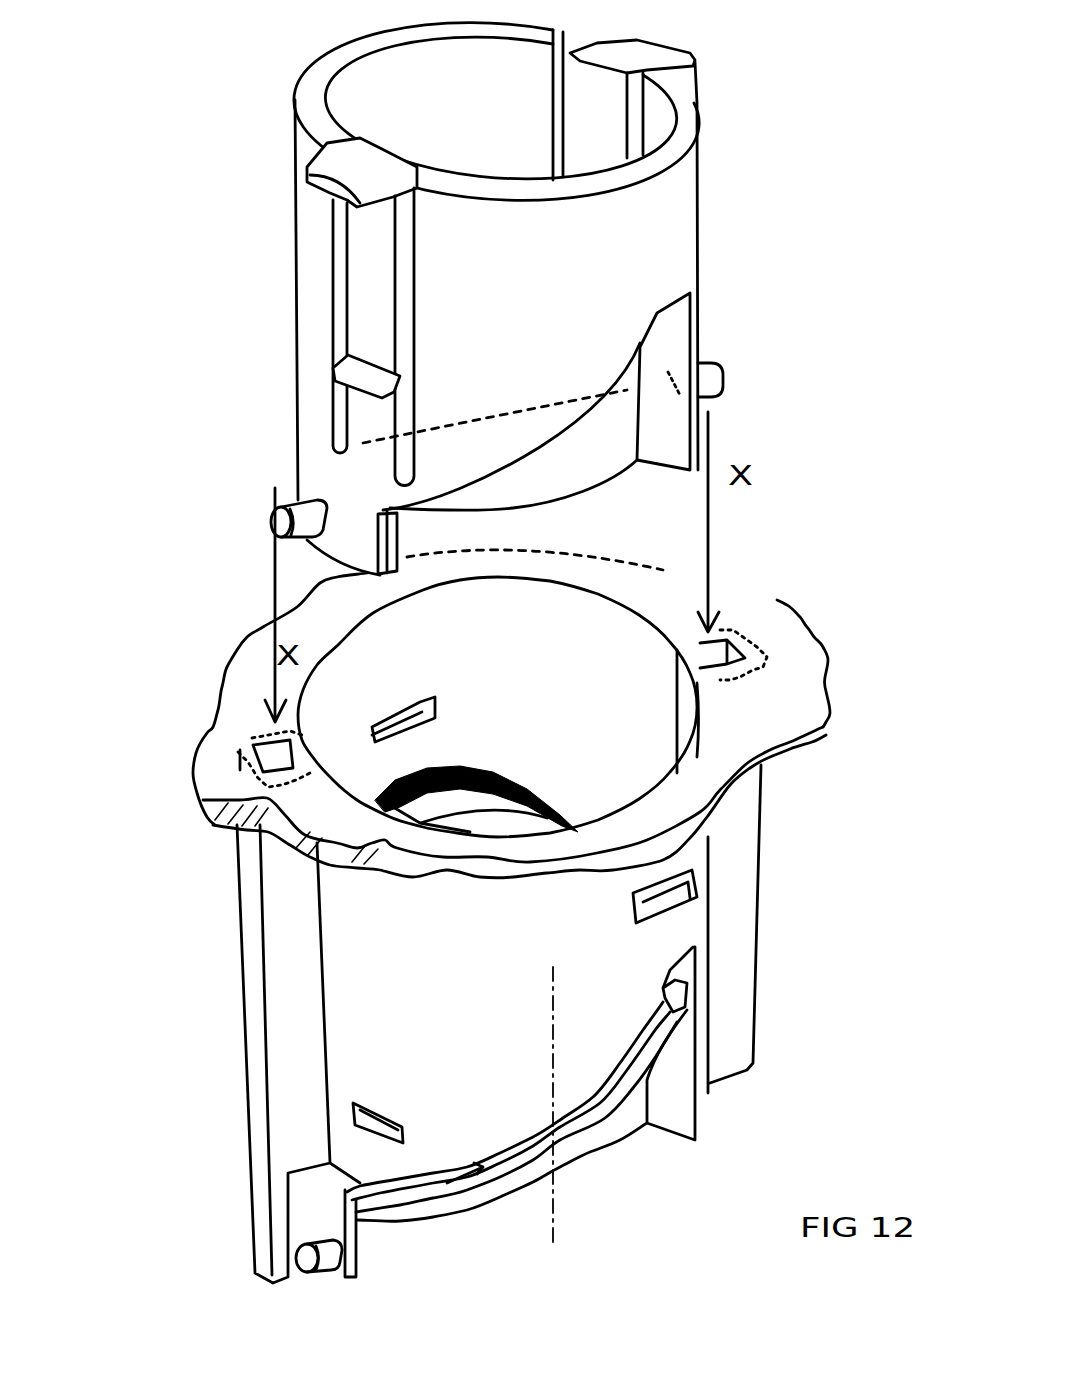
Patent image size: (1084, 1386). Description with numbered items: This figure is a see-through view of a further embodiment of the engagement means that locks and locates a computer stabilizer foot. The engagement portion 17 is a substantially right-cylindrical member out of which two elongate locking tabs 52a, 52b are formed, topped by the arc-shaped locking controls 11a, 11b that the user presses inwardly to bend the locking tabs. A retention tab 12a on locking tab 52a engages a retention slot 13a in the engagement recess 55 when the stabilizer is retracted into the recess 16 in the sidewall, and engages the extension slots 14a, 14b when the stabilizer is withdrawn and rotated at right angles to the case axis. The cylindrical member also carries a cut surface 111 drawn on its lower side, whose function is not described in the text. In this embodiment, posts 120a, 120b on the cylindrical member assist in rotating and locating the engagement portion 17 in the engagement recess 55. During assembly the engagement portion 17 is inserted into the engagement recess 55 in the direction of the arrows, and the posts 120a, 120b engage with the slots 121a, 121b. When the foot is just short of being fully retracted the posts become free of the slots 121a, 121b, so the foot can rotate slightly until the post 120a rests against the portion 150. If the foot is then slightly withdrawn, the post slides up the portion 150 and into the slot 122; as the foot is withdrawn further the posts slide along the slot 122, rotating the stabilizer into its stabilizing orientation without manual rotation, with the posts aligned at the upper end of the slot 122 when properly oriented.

The locking control 11a is at (340, 177).
The locking control 11b is at (640, 53).
The retention tab 12a is at (360, 377).
The retention slot 13a is at (390, 1113).
The extension slot 14a is at (417, 700).
The extension slot 14b is at (683, 908).
The recess 16 is at (800, 693).
The engagement portion 17 is at (706, 196).
The locking tab 52a is at (380, 325).
The locking tab 52b is at (593, 118).
The engagement recess 55 is at (647, 620).
The cam surface 111 is at (588, 470).
The post 120a is at (285, 540).
The post 120b is at (716, 378).
The slot 121a is at (255, 744).
The slot 121b is at (713, 640).
The slot 122 is at (508, 784).
The portion 150 is at (352, 1243).